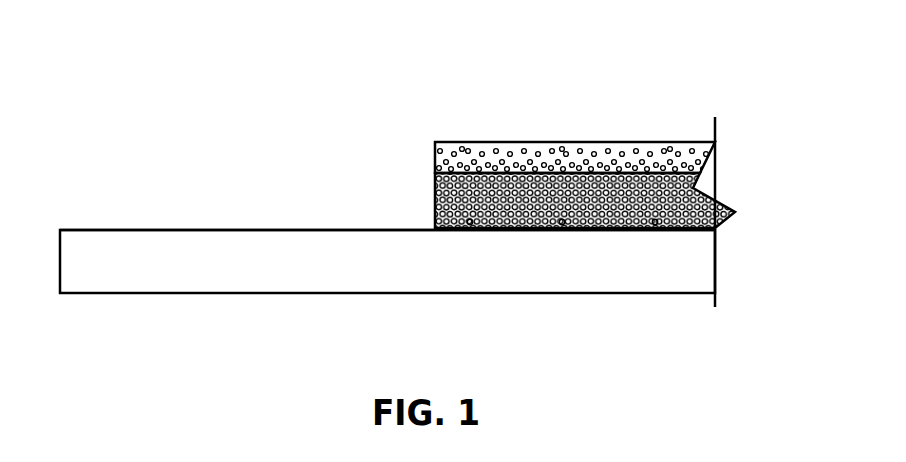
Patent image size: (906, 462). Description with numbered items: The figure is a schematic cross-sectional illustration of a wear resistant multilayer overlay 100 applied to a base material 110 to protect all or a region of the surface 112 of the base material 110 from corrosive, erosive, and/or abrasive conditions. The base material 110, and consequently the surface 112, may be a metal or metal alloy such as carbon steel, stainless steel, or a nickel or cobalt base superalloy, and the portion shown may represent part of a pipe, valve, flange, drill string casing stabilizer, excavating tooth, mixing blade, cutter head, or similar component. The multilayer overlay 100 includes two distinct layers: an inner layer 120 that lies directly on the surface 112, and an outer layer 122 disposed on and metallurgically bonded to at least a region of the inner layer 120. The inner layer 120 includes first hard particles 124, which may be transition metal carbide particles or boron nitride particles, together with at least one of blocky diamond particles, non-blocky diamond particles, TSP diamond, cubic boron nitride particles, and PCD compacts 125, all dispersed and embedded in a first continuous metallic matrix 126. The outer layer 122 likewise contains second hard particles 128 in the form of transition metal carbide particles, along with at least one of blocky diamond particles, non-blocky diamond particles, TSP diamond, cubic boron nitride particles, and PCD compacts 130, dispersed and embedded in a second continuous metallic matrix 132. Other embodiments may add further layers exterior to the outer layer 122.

The multilayer overlay 100 is at (630, 55).
The base material 110 is at (118, 296).
The surface 112 is at (108, 222).
The inner layer 120 is at (410, 200).
The outer layer 122 is at (410, 160).
The first hard particles 124 is at (470, 228).
The blocky diamond particles, non-blocky diamond particles, TSP diamond, cubic boron 125 is at (562, 228).
The first continuous metallic matrix 126 is at (655, 228).
The second hard particles 128 is at (562, 142).
The blocky diamond particles, non-blocky diamond particles, TSP diamond, cubic boron 130 is at (670, 142).
The second continuous metallic matrix 132 is at (462, 142).